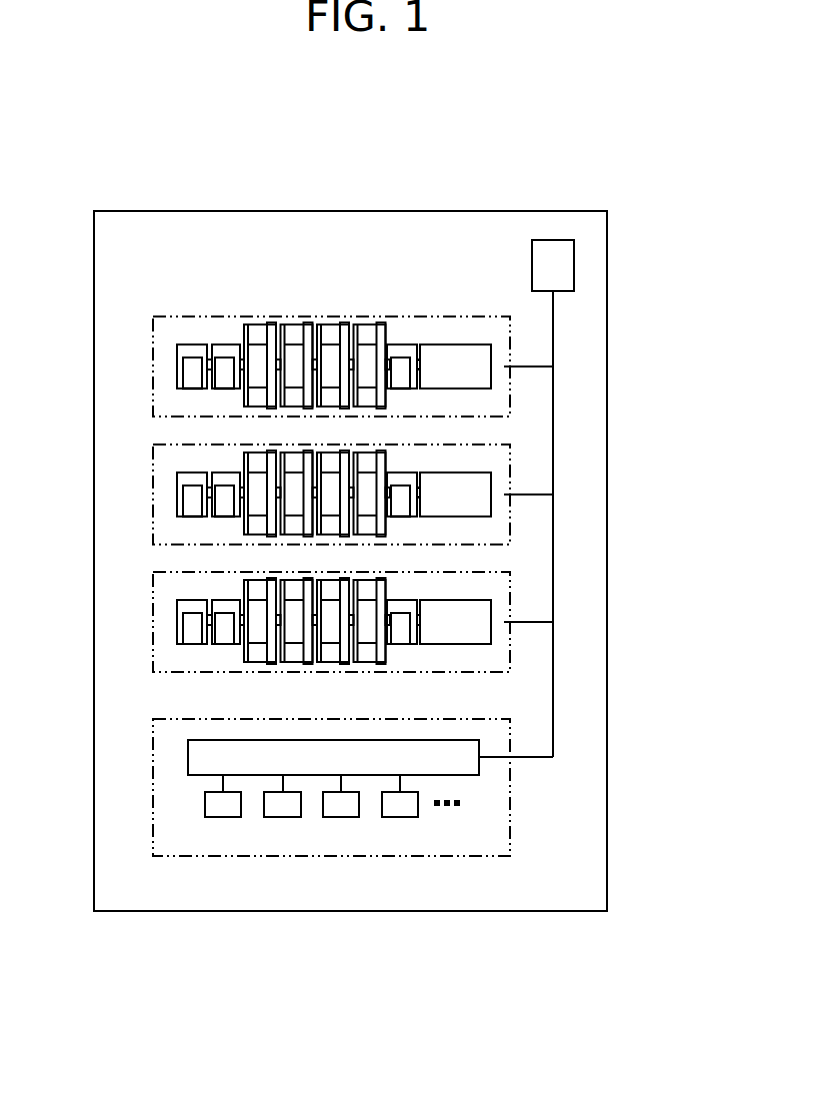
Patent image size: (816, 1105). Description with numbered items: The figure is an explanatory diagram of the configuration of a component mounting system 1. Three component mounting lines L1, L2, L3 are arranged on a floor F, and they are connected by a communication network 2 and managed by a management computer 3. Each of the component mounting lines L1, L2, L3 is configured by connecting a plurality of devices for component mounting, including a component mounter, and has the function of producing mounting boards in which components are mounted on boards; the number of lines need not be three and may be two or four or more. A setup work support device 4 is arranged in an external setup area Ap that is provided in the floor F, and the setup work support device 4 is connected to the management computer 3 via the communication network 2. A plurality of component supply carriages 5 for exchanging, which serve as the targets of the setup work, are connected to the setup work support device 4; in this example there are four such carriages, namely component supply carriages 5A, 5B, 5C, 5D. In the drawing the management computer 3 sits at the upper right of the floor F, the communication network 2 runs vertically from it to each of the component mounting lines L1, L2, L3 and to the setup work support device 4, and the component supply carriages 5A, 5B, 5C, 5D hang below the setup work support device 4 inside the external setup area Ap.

The component mounting system 1 is at (343, 137).
The floor F is at (573, 210).
The communication network 2 is at (553, 412).
The management computer 3 is at (574, 265).
The setup work support device 4 is at (188, 759).
The component supply carriages 5 is at (283, 892).
The component supply carriage 5A is at (225, 817).
The component supply carriage 5B is at (285, 817).
The component supply carriage 5C is at (343, 817).
The component supply carriage 5D is at (402, 817).
The component mounting line L1 is at (508, 350).
The component mounting line L2 is at (508, 478).
The component mounting line L3 is at (508, 608).
The external setup area Ap is at (510, 787).